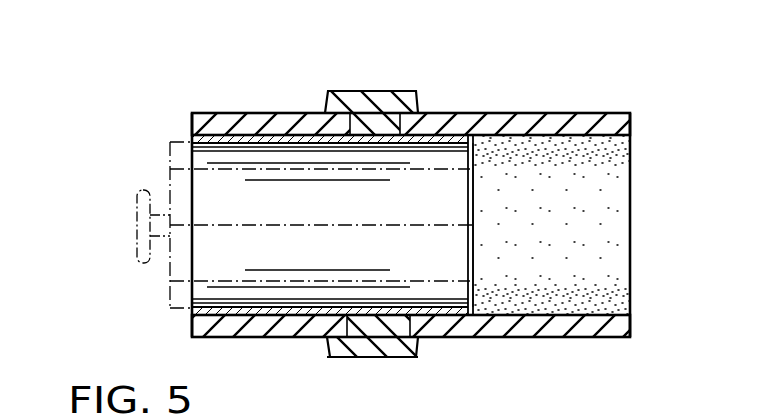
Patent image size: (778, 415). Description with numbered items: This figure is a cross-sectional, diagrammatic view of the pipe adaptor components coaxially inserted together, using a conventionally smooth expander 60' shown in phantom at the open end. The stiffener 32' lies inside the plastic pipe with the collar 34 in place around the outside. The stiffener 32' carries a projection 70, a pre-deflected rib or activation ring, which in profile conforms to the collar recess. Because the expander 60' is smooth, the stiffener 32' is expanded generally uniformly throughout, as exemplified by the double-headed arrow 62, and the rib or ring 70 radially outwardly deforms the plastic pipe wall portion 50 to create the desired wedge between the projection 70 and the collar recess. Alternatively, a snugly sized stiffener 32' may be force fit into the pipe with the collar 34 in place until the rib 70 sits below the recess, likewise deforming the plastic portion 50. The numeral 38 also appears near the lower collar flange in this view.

The stiffener 32' is at (332, 225).
The collar 34 is at (377, 88).
The projection 70 is at (400, 92).
The pipe wall portion 50 is at (367, 336).
The flange portion 38 is at (372, 386).
The double-headed arrow 62 is at (480, 208).
The smooth expander 60' is at (138, 262).